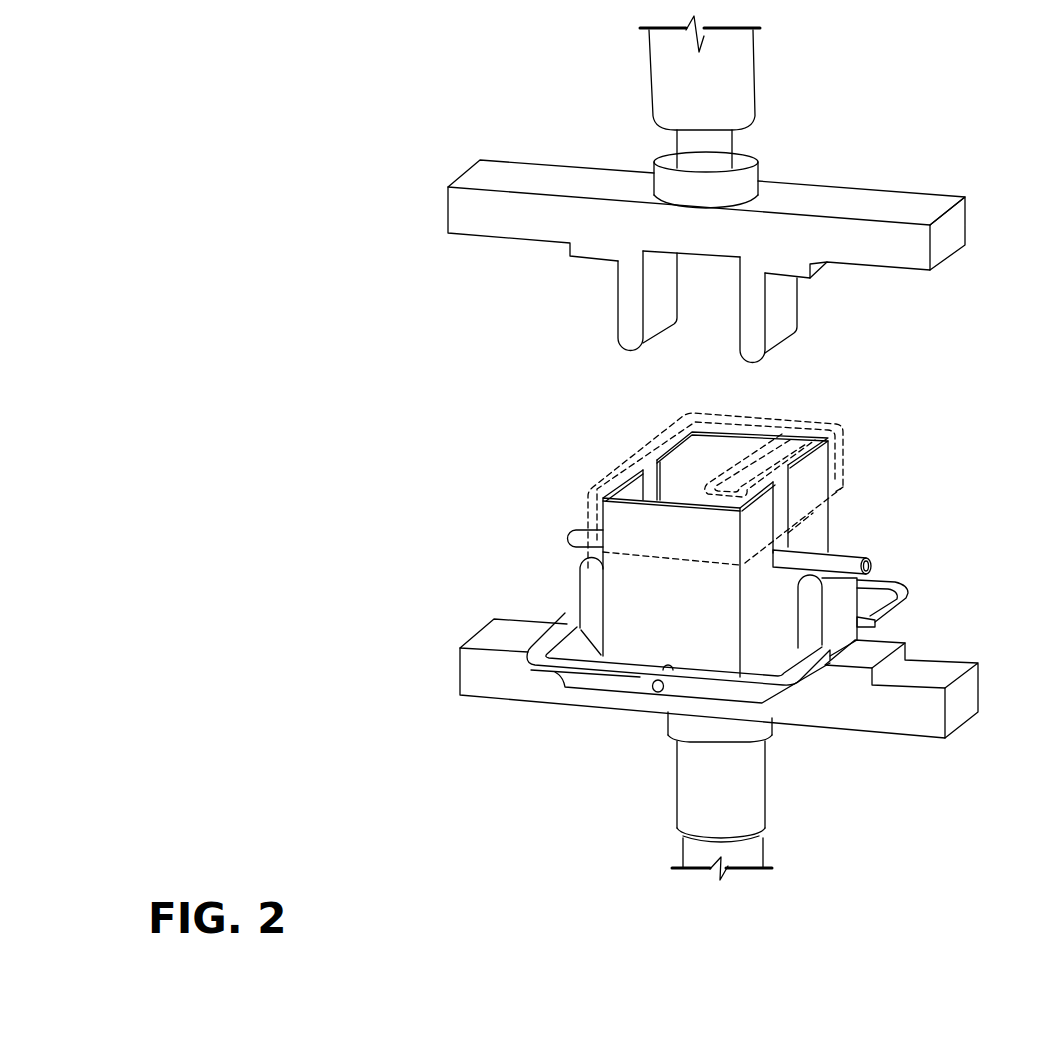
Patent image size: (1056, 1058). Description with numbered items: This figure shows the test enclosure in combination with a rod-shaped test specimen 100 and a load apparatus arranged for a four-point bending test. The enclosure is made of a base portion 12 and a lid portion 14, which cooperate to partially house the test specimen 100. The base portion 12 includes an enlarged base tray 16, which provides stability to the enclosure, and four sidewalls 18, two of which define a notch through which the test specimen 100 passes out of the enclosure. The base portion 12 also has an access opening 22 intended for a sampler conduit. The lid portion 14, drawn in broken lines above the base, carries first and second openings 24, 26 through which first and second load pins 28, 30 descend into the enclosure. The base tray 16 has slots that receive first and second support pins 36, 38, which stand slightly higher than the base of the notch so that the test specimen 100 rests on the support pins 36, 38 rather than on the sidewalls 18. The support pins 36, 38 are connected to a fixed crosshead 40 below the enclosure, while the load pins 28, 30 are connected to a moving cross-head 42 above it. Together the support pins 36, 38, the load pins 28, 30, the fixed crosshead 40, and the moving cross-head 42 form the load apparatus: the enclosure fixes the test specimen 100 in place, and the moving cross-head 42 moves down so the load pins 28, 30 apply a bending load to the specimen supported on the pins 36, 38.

The base portion 12 is at (820, 525).
The lid portion 14 is at (843, 467).
The base tray 16 is at (909, 578).
The sidewalls 18 is at (753, 626).
The access opening 22 is at (662, 667).
The first opening 24 is at (648, 466).
The second opening 26 is at (795, 440).
The first load pin 28 is at (622, 337).
The second load pin 30 is at (767, 328).
The first support pin 36 is at (578, 588).
The second support pin 38 is at (843, 601).
The fixed crosshead 40 is at (872, 738).
The moving cross-head 42 is at (900, 205).
The test specimen 100 is at (827, 540).